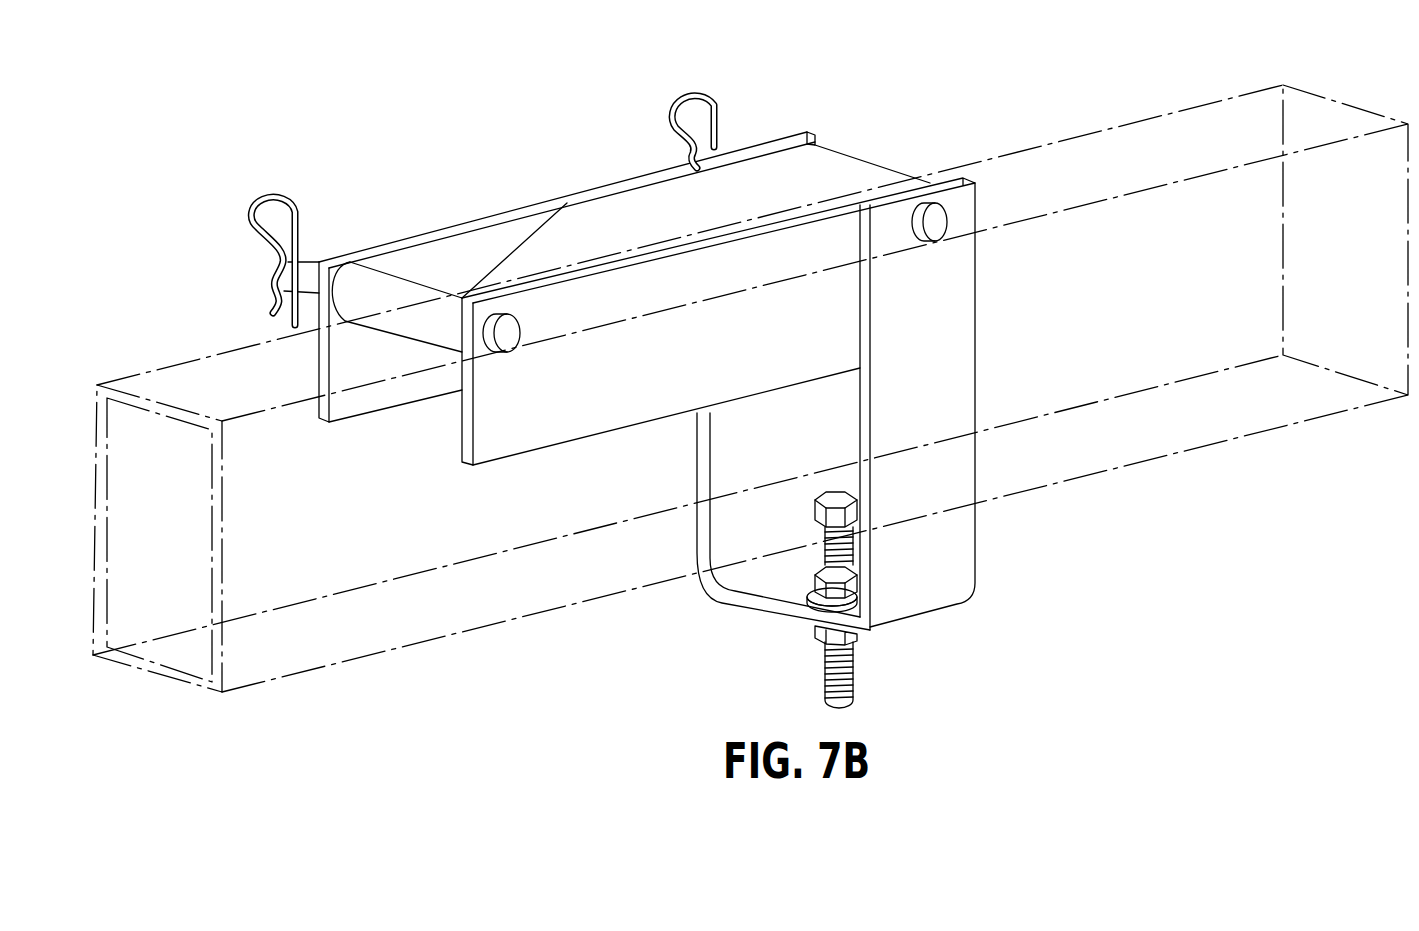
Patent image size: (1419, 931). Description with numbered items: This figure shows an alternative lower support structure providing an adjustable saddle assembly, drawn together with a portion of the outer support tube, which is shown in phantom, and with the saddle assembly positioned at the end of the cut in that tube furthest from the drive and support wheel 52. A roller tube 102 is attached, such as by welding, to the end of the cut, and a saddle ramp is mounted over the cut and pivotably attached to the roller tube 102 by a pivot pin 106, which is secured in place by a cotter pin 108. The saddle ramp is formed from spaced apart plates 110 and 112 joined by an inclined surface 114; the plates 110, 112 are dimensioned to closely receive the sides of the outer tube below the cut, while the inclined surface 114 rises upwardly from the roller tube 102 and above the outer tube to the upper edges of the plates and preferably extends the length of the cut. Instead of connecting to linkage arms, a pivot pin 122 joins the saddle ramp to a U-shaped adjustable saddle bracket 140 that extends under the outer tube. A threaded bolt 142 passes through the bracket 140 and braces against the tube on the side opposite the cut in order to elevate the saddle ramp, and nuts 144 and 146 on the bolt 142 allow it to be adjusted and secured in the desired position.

The drive and support wheel 52 is at (1077, 171).
The roller tube 102 is at (438, 321).
The pivot pin 106 is at (510, 332).
The cotter pin 108 is at (253, 213).
The plate 110 is at (719, 334).
The plate 112 is at (428, 258).
The inclined surface 114 is at (686, 226).
The pivot pin 122 is at (937, 224).
The U-shaped adjustable saddle bracket 140 is at (952, 368).
The threaded bolt 142 is at (857, 652).
The nut 144 is at (818, 633).
The nut 146 is at (818, 577).